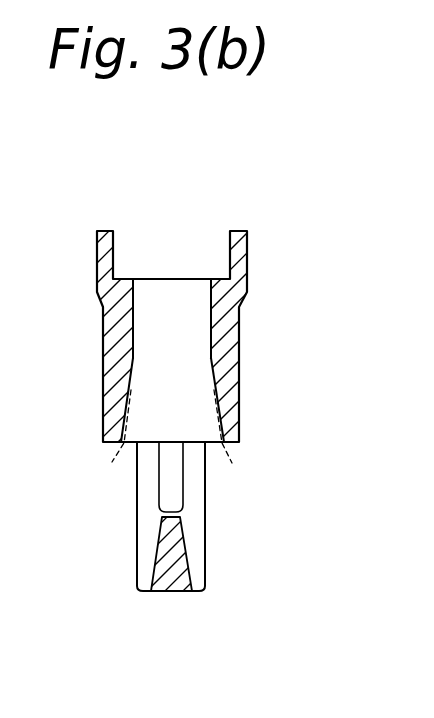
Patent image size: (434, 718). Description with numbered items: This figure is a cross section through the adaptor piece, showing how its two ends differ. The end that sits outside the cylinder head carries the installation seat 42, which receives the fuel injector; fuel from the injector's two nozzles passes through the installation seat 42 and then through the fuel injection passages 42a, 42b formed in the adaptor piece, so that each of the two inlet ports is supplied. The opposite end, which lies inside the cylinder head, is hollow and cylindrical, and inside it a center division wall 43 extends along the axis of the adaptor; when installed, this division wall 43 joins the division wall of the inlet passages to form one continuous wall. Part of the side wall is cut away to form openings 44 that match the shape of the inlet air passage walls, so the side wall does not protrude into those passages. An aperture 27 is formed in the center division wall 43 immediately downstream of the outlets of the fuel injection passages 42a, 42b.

The installation seat 42 is at (230, 254).
The fuel injection passage 42a is at (142, 376).
The fuel injection passage 42b is at (210, 366).
The openings 44 is at (124, 447).
The aperture 27 is at (168, 491).
The center division wall 43 is at (169, 607).